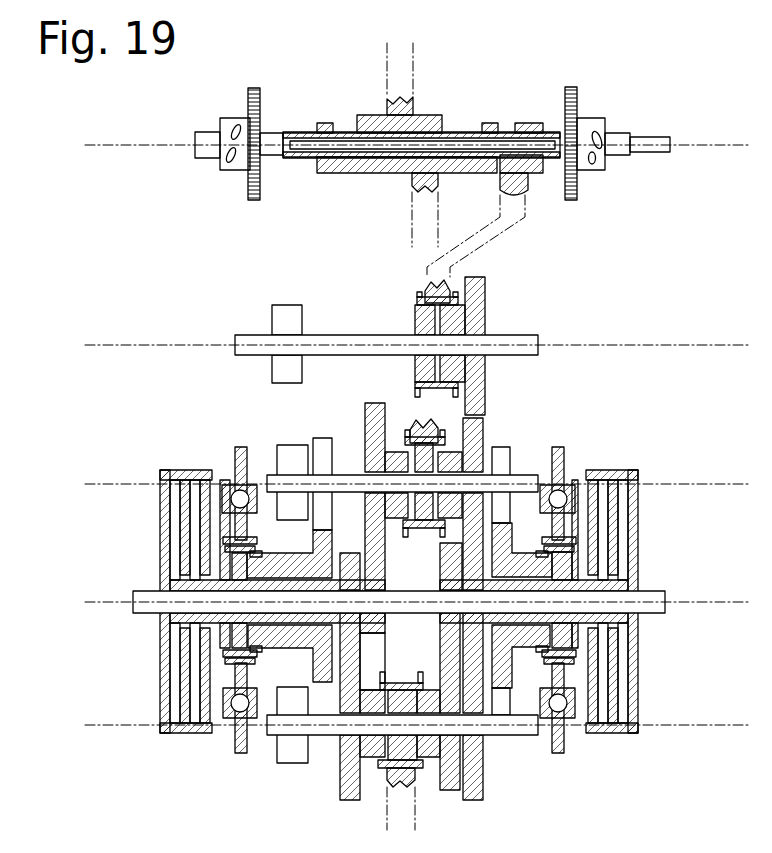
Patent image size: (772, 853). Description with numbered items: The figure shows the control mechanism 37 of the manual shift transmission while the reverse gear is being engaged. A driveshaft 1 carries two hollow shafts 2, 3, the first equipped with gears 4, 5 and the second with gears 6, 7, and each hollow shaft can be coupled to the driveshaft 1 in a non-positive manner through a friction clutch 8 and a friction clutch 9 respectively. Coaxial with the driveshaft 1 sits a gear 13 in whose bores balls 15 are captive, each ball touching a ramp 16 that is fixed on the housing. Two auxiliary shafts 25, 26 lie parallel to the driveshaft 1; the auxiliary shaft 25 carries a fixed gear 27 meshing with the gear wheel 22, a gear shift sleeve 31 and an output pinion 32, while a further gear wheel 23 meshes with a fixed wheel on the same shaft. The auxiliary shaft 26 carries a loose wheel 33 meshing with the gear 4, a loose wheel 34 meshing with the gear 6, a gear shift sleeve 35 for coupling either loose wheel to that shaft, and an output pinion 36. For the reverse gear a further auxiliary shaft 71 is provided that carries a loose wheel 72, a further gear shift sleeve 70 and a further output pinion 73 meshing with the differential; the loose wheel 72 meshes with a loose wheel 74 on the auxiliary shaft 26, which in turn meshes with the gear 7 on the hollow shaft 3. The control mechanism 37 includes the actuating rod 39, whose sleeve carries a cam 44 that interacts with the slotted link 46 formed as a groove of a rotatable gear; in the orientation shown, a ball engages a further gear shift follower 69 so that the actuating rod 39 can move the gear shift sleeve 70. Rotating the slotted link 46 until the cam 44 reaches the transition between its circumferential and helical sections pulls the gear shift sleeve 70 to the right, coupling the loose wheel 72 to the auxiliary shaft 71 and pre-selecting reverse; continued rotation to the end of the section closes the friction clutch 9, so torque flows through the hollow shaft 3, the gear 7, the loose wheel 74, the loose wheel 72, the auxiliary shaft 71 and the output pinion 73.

The driveshaft 1 is at (153, 597).
The hollow shaft 2 is at (287, 578).
The hollow shaft 3 is at (517, 625).
The gear 4 is at (347, 562).
The gear 5 is at (369, 634).
The gear 6 is at (446, 565).
The gear 7 is at (468, 580).
The friction clutch 8 is at (169, 450).
The friction clutch 9 is at (638, 452).
The gear 13 is at (238, 470).
The balls 15 is at (230, 709).
The ramp 16 is at (257, 704).
The gear wheel 22 is at (290, 654).
The gear wheel 23 is at (512, 554).
The auxiliary shaft 25 is at (528, 474).
The auxiliary shaft 26 is at (493, 738).
The fixed gear 27 is at (327, 457).
The gear shift sleeve 31 is at (405, 438).
The output pinion 32 is at (283, 457).
The loose wheel 33 is at (342, 773).
The loose wheel 34 is at (452, 773).
The gear shift sleeve 35 is at (405, 672).
The output pinion 36 is at (300, 745).
The control mechanism 37 is at (127, 118).
The actuating rod 39 is at (465, 117).
The cam 44 is at (600, 141).
The slotted link 46 is at (598, 112).
The gear shift follower 69 is at (518, 190).
The gear shift sleeve 70 is at (420, 300).
The auxiliary shaft 71 is at (347, 340).
The loose wheel 72 is at (488, 316).
The output pinion 73 is at (287, 323).
The loose wheel 74 is at (483, 777).